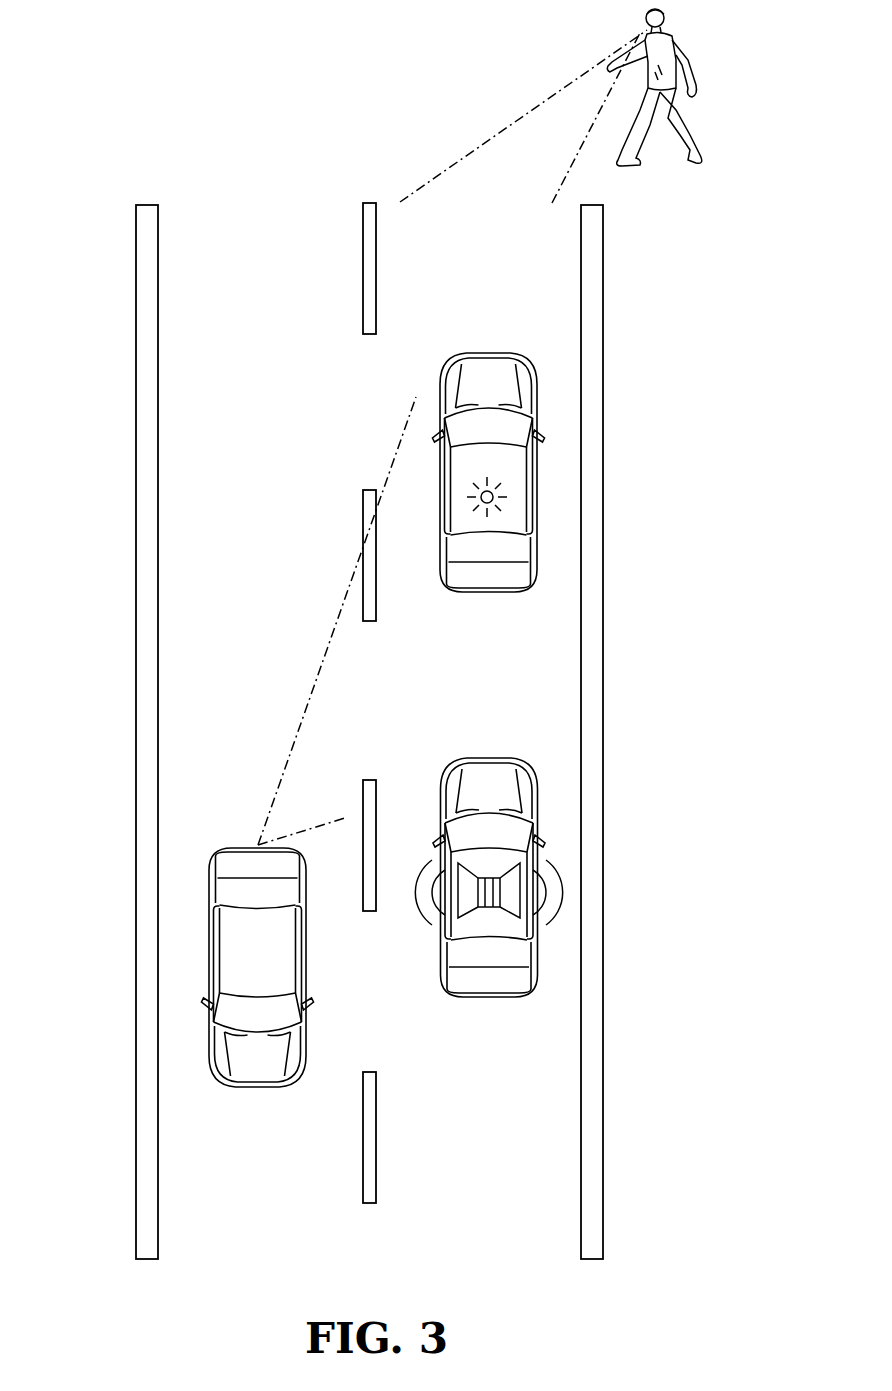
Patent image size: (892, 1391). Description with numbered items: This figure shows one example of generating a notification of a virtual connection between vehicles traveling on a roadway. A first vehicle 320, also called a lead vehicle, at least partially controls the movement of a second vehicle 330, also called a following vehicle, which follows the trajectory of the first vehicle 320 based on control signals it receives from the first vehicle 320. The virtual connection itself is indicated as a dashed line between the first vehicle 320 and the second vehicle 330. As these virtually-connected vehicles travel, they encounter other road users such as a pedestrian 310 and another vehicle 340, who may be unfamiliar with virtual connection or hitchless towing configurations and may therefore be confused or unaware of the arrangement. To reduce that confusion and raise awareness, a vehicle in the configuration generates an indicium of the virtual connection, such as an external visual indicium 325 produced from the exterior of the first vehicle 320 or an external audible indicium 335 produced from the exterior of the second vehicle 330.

The pedestrian 310 is at (693, 70).
The first vehicle 320 is at (530, 428).
The external visual indicium 325 is at (494, 495).
The second vehicle 330 is at (535, 813).
The external audible indicium 335 is at (492, 908).
The other vehicle 340 is at (207, 952).